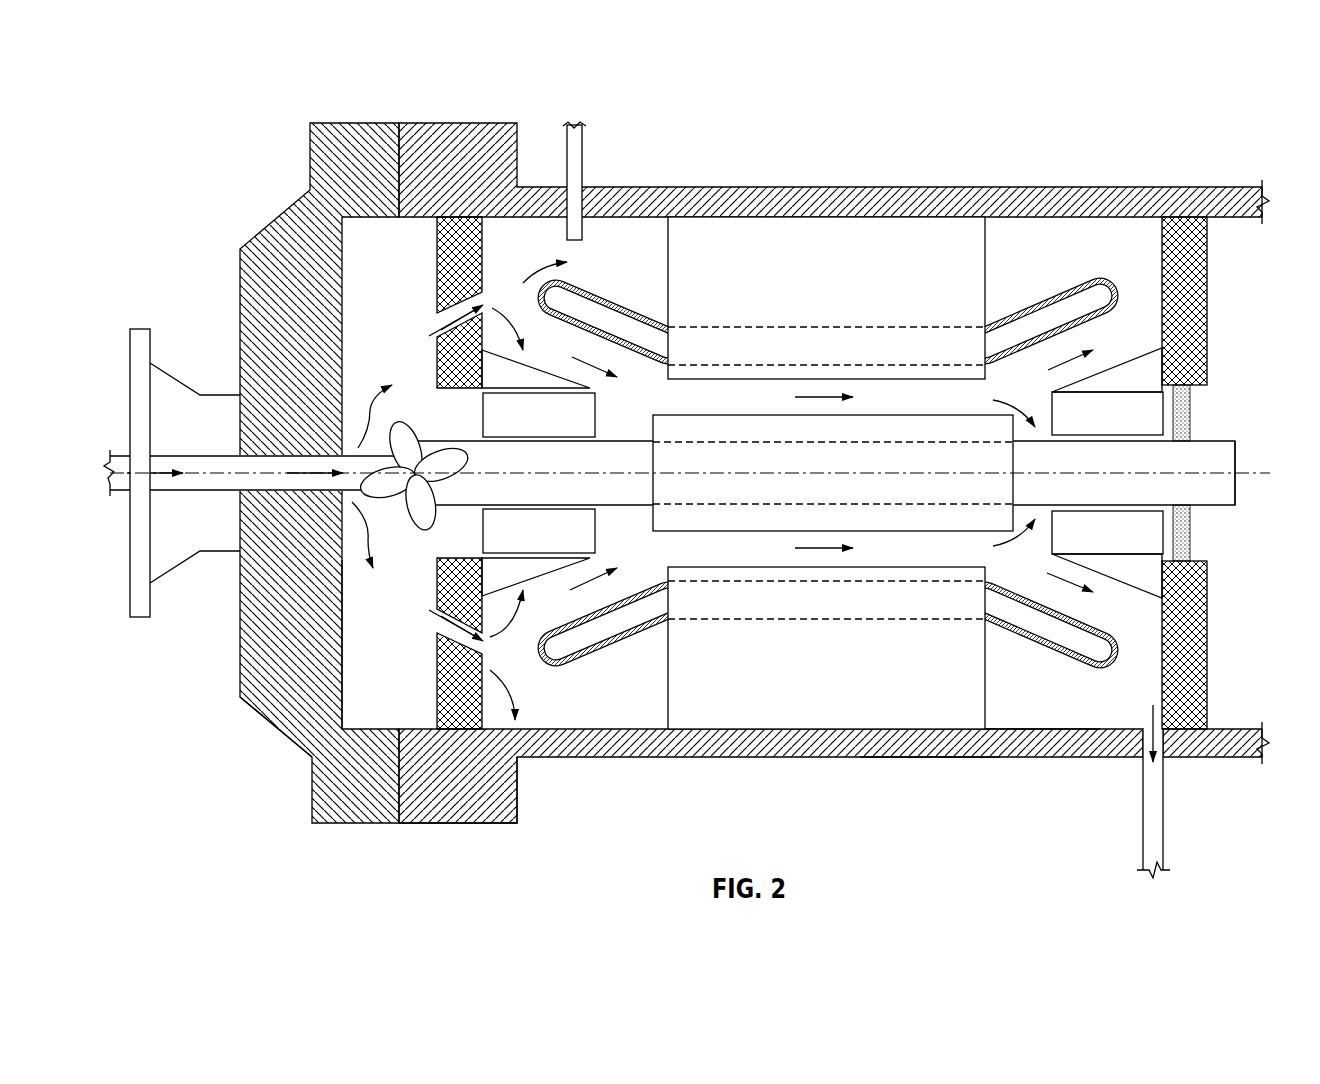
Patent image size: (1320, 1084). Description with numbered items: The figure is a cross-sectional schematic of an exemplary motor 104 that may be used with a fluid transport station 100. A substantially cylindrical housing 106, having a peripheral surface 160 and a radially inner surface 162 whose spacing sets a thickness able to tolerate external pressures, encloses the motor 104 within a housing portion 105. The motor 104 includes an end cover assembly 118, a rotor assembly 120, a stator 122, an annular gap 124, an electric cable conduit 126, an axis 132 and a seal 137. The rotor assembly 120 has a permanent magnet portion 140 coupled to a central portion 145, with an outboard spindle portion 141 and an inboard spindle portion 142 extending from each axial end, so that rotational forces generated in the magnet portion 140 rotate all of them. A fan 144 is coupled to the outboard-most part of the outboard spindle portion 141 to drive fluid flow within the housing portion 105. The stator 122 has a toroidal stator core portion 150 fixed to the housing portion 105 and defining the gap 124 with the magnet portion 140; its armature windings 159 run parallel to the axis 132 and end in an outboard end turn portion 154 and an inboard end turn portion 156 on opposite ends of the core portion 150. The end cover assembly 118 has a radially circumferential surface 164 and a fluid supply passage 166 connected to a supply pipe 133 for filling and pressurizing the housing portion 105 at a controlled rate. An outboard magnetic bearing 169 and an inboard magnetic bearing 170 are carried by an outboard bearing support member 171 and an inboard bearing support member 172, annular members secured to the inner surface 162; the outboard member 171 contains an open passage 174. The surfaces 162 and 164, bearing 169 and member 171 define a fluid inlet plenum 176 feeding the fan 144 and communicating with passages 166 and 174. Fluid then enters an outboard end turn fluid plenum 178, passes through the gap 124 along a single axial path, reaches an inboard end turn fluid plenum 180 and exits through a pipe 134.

The fluid transport station 100 is at (175, 107).
The motor 104 is at (248, 188).
The housing portion 105 is at (572, 747).
The housing 106 is at (977, 743).
The end cover assembly 118 is at (303, 748).
The rotor assembly 120 is at (1232, 473).
The stator 122 is at (893, 175).
The gap 124 is at (754, 411).
The electric cable conduit 126 is at (582, 142).
The axis 132 is at (1265, 470).
The supply pipe 133 is at (123, 453).
The pipe 134 is at (1165, 825).
The seal 137 is at (1192, 533).
The permanent magnet portion 140 is at (804, 486).
The outboard spindle portion 141 is at (552, 471).
The inboard spindle portion 142 is at (1153, 465).
The fan 144 is at (417, 427).
The central portion 145 is at (768, 506).
The stator core portion 150 is at (826, 473).
The outboard end turn portion 154 is at (623, 302).
The inboard end turn portion 156 is at (1032, 300).
The armature windings 159 is at (826, 473).
The peripheral surface 160 is at (913, 758).
The radially inner surface 162 is at (1040, 727).
The radially circumferential surface 164 is at (343, 693).
The fluid supply passage 166 is at (223, 465).
The outboard magnetic bearing 169 is at (560, 429).
The inboard magnetic bearing 170 is at (1124, 429).
The outboard bearing support member 171 is at (441, 262).
The inboard bearing support member 172 is at (1208, 302).
The open passage 174 is at (438, 318).
The fluid inlet plenum 176 is at (422, 559).
The outboard end turn fluid plenum 178 is at (534, 249).
The inboard end turn fluid plenum 180 is at (1135, 254).